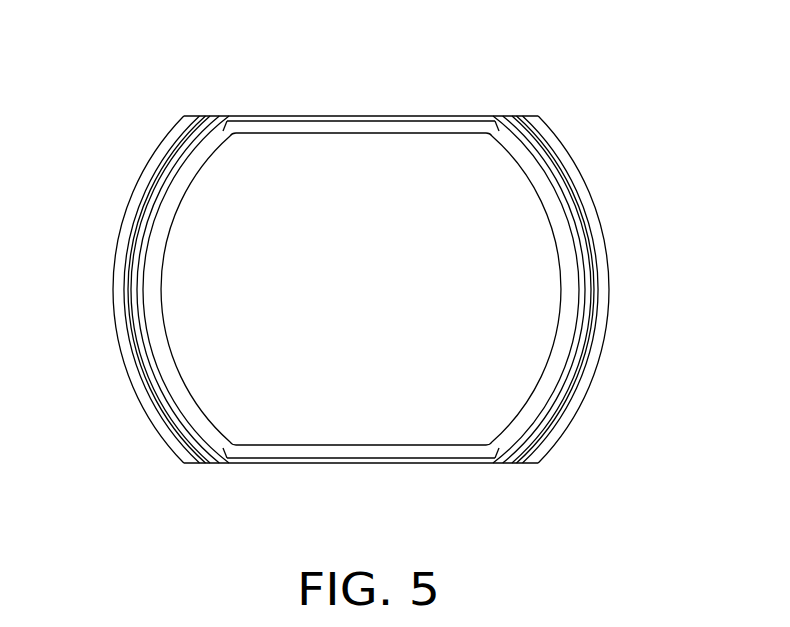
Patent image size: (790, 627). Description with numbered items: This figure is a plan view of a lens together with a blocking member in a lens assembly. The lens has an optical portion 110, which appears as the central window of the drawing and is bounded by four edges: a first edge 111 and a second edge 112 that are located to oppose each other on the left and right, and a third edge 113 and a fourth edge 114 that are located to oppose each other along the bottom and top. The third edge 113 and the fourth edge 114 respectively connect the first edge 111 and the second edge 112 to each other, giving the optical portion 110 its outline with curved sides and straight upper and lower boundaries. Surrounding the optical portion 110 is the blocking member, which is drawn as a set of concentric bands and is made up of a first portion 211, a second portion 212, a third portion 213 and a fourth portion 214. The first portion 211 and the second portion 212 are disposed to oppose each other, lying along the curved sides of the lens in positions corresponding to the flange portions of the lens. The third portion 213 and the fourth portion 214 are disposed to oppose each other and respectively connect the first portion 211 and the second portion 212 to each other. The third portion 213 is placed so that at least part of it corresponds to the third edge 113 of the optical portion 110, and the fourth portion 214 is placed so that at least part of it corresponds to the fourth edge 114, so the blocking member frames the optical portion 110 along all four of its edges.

The optical portion 110 is at (445, 418).
The first edge 111 is at (122, 334).
The second edge 112 is at (603, 325).
The third edge 113 is at (300, 463).
The fourth edge 114 is at (290, 116).
The first portion 211 is at (148, 262).
The second portion 212 is at (582, 235).
The third portion 213 is at (372, 458).
The fourth portion 214 is at (363, 121).